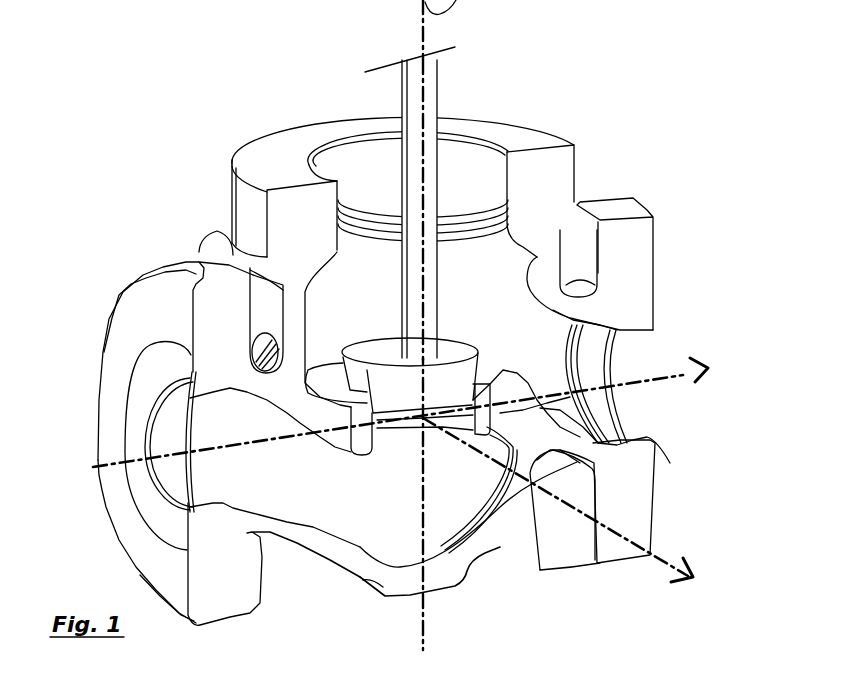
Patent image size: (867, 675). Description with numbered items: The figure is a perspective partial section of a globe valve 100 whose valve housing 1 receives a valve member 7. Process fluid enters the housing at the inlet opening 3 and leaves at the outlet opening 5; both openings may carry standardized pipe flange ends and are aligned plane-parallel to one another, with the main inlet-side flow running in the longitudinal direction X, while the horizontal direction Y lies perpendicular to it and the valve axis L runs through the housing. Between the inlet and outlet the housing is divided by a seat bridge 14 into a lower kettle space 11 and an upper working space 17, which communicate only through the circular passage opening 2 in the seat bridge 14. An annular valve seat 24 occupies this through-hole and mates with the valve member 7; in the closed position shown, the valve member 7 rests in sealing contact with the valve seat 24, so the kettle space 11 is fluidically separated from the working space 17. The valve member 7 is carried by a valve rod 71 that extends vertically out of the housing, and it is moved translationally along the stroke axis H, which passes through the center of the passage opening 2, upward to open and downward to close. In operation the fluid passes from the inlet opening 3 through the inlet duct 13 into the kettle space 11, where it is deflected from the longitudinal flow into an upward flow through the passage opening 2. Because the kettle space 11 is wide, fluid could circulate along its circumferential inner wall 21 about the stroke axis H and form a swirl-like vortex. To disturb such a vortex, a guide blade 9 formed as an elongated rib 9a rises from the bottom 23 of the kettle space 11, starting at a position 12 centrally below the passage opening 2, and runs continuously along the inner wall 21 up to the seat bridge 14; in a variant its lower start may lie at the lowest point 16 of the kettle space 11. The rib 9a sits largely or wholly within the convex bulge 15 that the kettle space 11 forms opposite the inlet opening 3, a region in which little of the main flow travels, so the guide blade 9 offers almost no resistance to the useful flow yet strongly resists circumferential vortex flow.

The globe valve 100 is at (620, 163).
The valve housing 1 is at (552, 182).
The valve rod 71 is at (433, 167).
The valve seat 24 is at (373, 388).
The working space 17 is at (358, 302).
The inlet opening 3 is at (86, 448).
The valve member 7 is at (463, 371).
The outlet opening 5 is at (657, 356).
The seat bridge 14 is at (620, 433).
The inlet duct 13 is at (233, 479).
The inner wall 21 is at (365, 483).
The kettle space 11 is at (360, 538).
The bottom 23 is at (385, 548).
The lowest point 16 is at (417, 559).
The position 12 is at (400, 433).
The passage opening 2 is at (445, 557).
The convex bulge 15 is at (480, 537).
The guide blade 9 is at (512, 502).
The rib 9a is at (508, 496).
The longitudinal direction X is at (681, 378).
The horizontal direction Y is at (660, 557).
The valve axis L is at (630, 388).
The stroke axis H is at (426, 617).